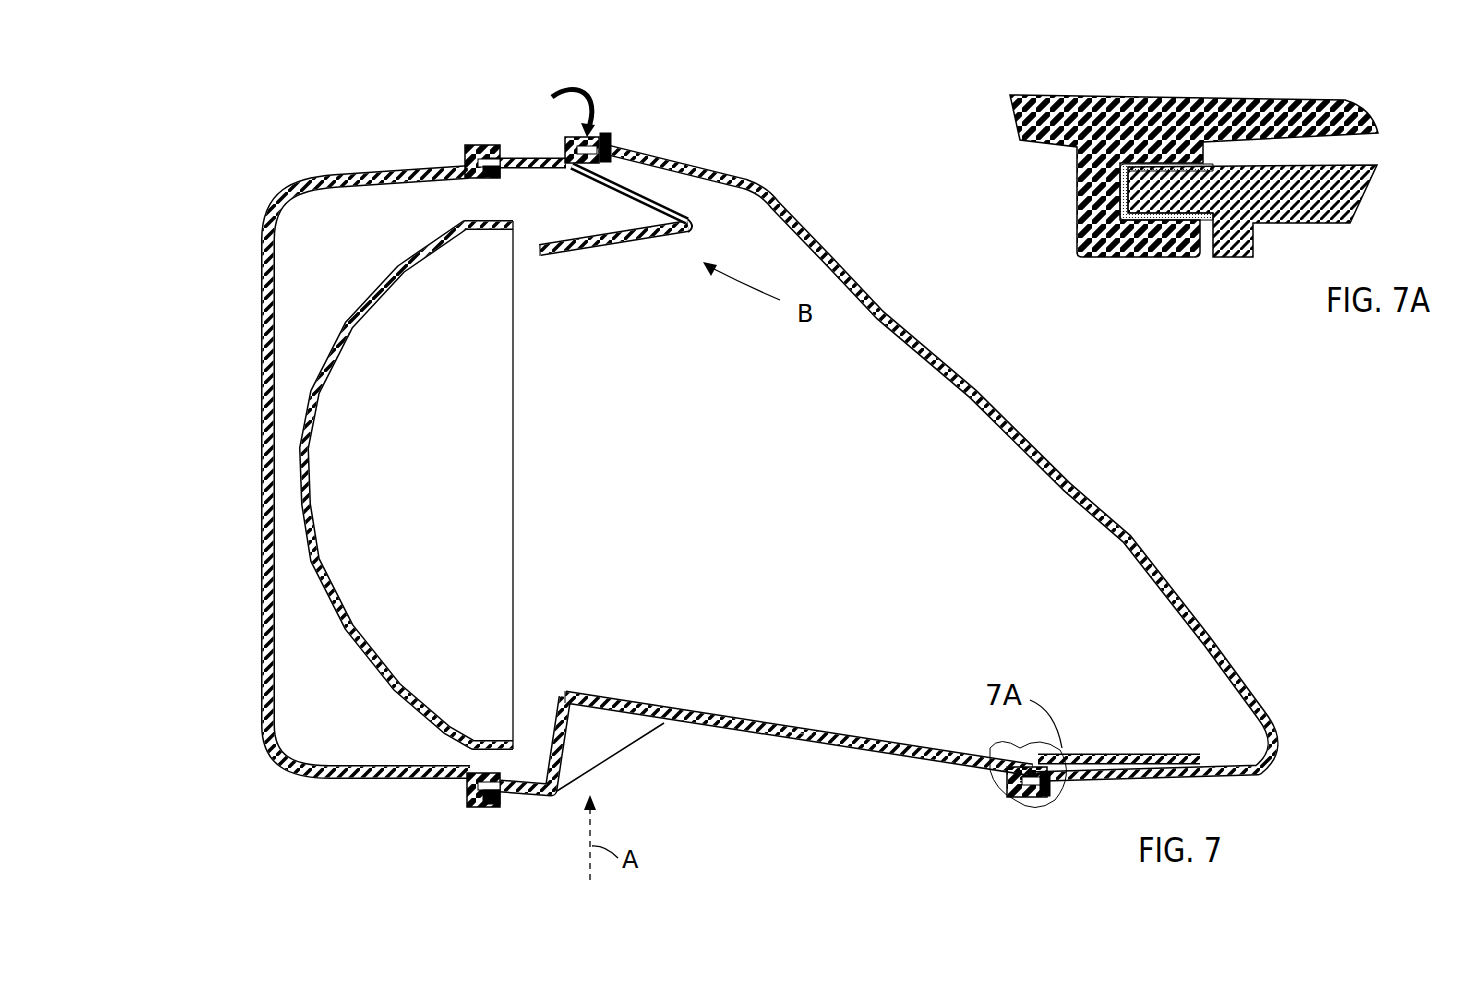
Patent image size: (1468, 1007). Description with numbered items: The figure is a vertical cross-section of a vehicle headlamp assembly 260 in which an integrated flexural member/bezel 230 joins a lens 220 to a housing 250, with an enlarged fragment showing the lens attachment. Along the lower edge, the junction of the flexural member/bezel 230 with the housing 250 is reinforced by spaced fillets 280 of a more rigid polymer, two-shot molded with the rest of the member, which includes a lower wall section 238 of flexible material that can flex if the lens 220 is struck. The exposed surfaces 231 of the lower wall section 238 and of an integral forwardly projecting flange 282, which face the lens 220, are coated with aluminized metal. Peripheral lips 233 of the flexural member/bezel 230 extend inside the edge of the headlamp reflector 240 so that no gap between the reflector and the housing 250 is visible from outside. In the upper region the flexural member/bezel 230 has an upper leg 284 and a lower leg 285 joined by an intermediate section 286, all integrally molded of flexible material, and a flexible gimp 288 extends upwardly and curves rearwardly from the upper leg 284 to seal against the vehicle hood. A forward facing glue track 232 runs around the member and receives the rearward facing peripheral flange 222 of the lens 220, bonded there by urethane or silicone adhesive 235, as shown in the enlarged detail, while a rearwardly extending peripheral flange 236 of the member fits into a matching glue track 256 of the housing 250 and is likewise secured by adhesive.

In FIG. 7, the lens 220 is at (1125, 520).
In FIG. 7, the rearward facing peripheral flange 222 is at (612, 140).
In FIG. 7A, the rearward facing peripheral flange 222 is at (1265, 214).
In FIG. 7, the integrated flexural member/bezel 230 is at (792, 723).
In FIG. 7, the exposed surfaces 231 is at (637, 243).
In FIG. 7, the forward facing glue track 232 is at (565, 140).
In FIG. 7A, the forward facing glue track 232 is at (1140, 258).
In FIG. 7, the peripheral lips 233 is at (543, 250).
In FIG. 7A, the adhesive 235 is at (1198, 168).
In FIG. 7, the rearwardly extending peripheral flange 236 is at (503, 178).
In FIG. 7, the lower wall section 238 is at (802, 742).
In FIG. 7, the headlamp reflector 240 is at (330, 556).
In FIG. 7, the housing 250 is at (258, 345).
In FIG. 7, the glue track 256 is at (488, 145).
In FIG. 7, the vehicle headlamp assembly 260 is at (1126, 443).
In FIG. 7, the fillets 280 is at (625, 752).
In FIG. 7, the forwardly projecting flange 282 is at (1117, 753).
In FIG. 7, the upper leg 284 is at (521, 154).
In FIG. 7, the lower leg 285 is at (606, 256).
In FIG. 7, the intermediate section 286 is at (654, 193).
In FIG. 7, the gimp 288 is at (578, 98).